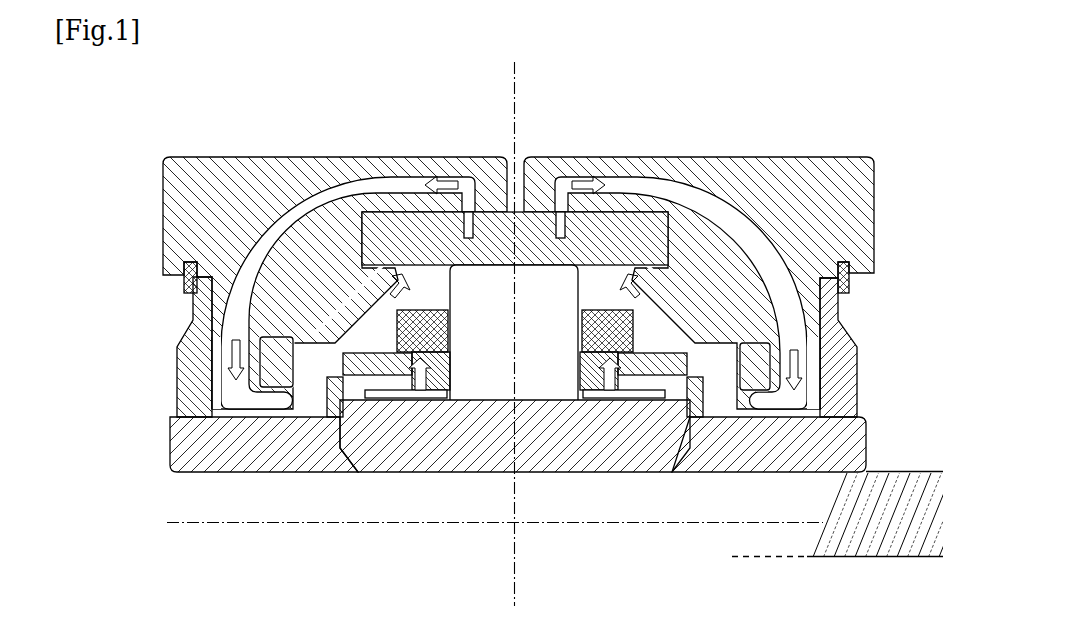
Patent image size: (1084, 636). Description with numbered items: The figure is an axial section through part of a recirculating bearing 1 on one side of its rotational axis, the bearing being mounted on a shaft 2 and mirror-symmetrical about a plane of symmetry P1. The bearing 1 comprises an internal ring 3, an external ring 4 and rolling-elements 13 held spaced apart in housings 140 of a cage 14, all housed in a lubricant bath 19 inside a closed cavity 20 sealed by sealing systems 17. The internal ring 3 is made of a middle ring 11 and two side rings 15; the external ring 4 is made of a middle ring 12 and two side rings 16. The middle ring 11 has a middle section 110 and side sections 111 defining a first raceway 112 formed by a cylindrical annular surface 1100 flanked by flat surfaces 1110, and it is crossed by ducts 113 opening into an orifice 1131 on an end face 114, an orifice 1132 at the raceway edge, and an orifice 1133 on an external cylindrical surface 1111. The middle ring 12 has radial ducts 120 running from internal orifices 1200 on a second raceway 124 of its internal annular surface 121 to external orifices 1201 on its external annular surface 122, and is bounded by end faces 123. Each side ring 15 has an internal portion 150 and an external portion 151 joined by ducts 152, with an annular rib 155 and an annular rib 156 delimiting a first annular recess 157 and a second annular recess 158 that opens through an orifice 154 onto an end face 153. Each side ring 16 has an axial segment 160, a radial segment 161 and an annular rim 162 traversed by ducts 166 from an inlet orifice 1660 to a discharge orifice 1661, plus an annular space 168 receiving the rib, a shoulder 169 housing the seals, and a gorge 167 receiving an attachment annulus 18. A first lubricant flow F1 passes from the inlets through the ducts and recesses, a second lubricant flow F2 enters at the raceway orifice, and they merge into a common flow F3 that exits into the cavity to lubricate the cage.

The recirculating bearing 1 is at (104, 169).
The shaft 2 is at (910, 557).
The internal ring 3 is at (125, 455).
The external ring 4 is at (113, 200).
The middle ring 11 is at (355, 481).
The middle ring 12 is at (552, 268).
The rolling-elements 13 is at (531, 334).
The cage 14 is at (412, 334).
The side rings 15 is at (164, 479).
The side rings 16 is at (162, 155).
The sealing systems 17 is at (193, 286).
The attachment annulus 18 is at (184, 278).
The lubricant bath 19 is at (414, 284).
The cavity 20 is at (419, 305).
The middle section 110 is at (508, 430).
The side sections 111 is at (392, 470).
The first raceway 112 is at (478, 430).
The ducts 113 is at (398, 470).
The end face 114 is at (683, 430).
The ducts 120 is at (498, 210).
The internal annular surface 121 is at (318, 228).
The external annular surface 122 is at (388, 200).
The end faces 123 is at (332, 230).
The second raceway 124 is at (580, 262).
The housings 140 is at (660, 199).
The internal portion 150 is at (204, 472).
The external portion 151 is at (296, 445).
The ducts 152 is at (296, 405).
The end face 153 is at (338, 452).
The orifice 154 is at (332, 440).
The annular rib 155 is at (327, 326).
The annular rib 156 is at (269, 372).
The first annular recess 157 is at (262, 472).
The second annular recess 158 is at (348, 470).
The axial segment 160 is at (320, 178).
The radial segment 161 is at (212, 350).
The annular rim 162 is at (770, 417).
The ducts 166 is at (265, 200).
The gorge 167 is at (182, 262).
The annular space 168 is at (178, 417).
The shoulder 169 is at (163, 212).
The cylindrical annular surface 1100 is at (482, 400).
The flat surfaces 1110 is at (430, 402).
The external cylindrical surface 1111 is at (820, 290).
The orifice 1131 is at (663, 425).
The orifice 1132 is at (567, 400).
The orifice 1133 is at (617, 402).
The internal orifice 1200 is at (460, 212).
The external orifice 1201 is at (433, 200).
The inlet orifice 1660 is at (348, 293).
The discharge orifice 1661 is at (745, 420).
The first lubricant flow F1 is at (448, 185).
The second lubricant flow F2 is at (395, 472).
The common flow F3 is at (412, 370).
The plane of symmetry P1 is at (518, 602).